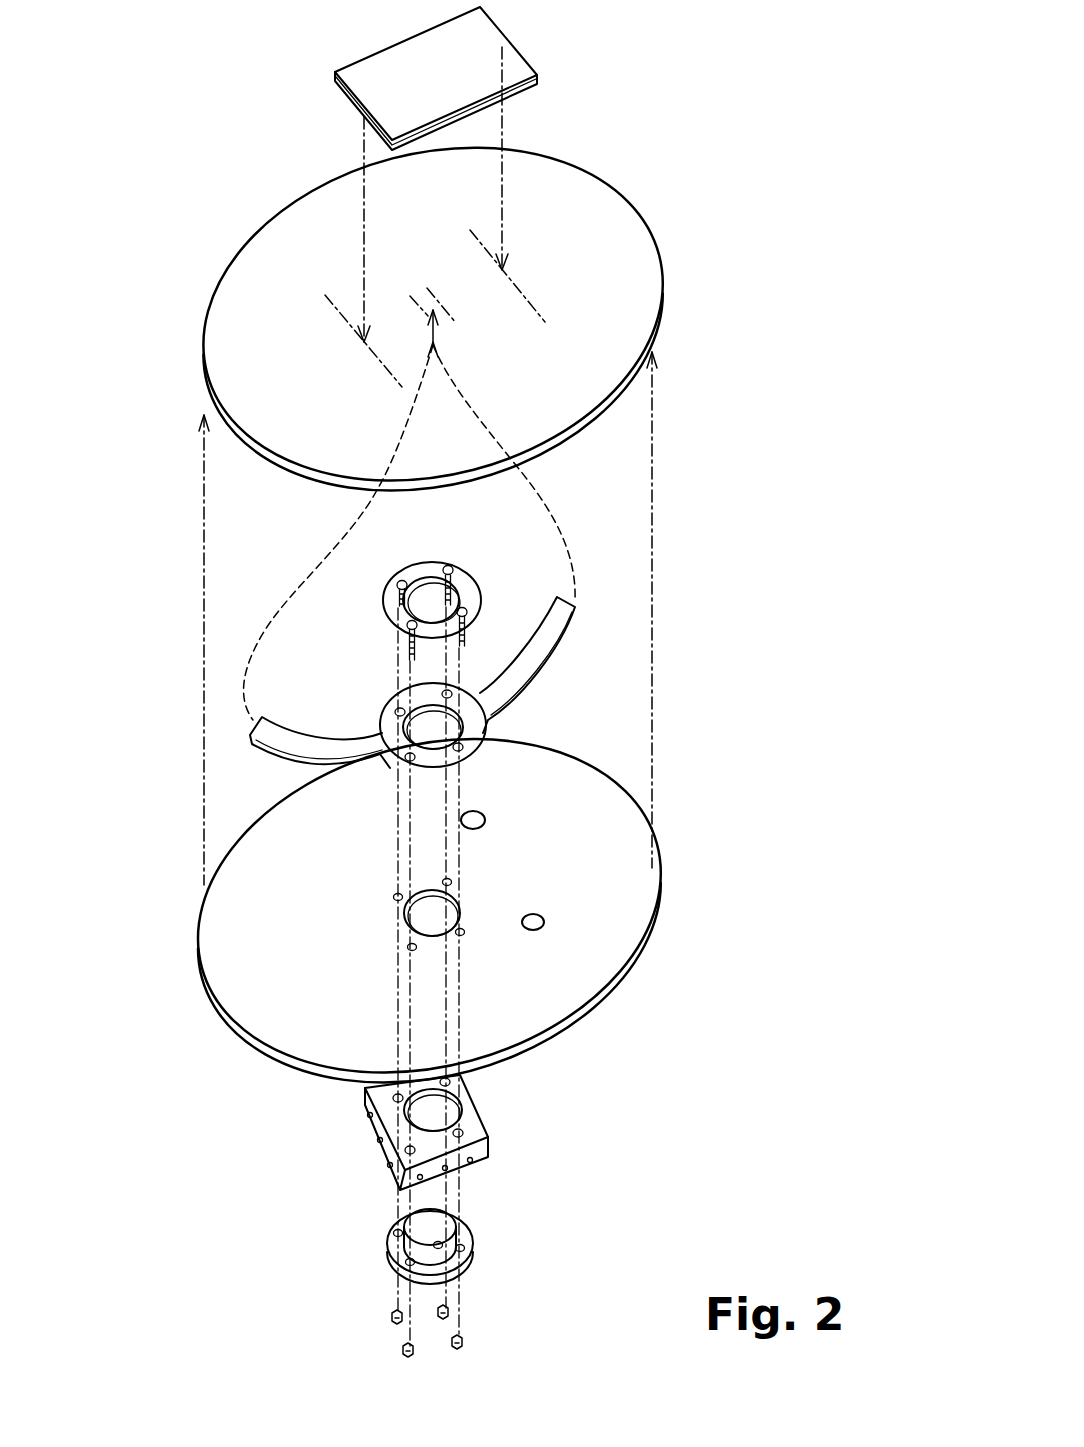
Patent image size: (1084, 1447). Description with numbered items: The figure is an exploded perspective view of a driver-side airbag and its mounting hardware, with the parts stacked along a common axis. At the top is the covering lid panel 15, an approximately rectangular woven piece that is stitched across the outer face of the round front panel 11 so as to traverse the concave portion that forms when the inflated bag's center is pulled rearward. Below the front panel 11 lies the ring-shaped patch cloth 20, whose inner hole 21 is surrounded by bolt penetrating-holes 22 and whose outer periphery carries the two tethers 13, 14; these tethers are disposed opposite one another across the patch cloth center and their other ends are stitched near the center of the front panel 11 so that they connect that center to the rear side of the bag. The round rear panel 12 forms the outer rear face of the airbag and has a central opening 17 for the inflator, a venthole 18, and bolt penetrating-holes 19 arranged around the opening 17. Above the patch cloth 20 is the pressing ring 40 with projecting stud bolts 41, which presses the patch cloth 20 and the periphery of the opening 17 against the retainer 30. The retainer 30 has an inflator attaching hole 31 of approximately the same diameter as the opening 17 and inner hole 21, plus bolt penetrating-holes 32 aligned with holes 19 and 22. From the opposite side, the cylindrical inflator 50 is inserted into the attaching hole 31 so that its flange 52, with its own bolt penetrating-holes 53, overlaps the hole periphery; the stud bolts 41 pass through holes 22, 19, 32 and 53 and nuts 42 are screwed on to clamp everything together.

The front panel 11 is at (600, 206).
The rear panel 12 is at (272, 1020).
The tether 13 is at (278, 744).
The tether 14 is at (555, 635).
The covering lid panel 15 is at (470, 28).
The opening for inflator 17 is at (422, 918).
The venthole 18 is at (486, 823).
The bolt penetrating-hole 19 is at (450, 882).
The patch cloth 20 is at (431, 977).
The inner hole 21 is at (432, 742).
The bolt penetrating-hole 22 is at (398, 709).
The retainer 30 is at (485, 1120).
The inflator attaching hole 31 is at (432, 1112).
The bolt penetrating-hole 32 is at (375, 1108).
The pressing ring 40 is at (432, 575).
The stud bolt 41 is at (465, 636).
The nut 42 is at (392, 1318).
The inflator 50 is at (470, 1222).
The flange 52 is at (468, 1235).
The bolt penetrating-hole 53 is at (395, 1236).